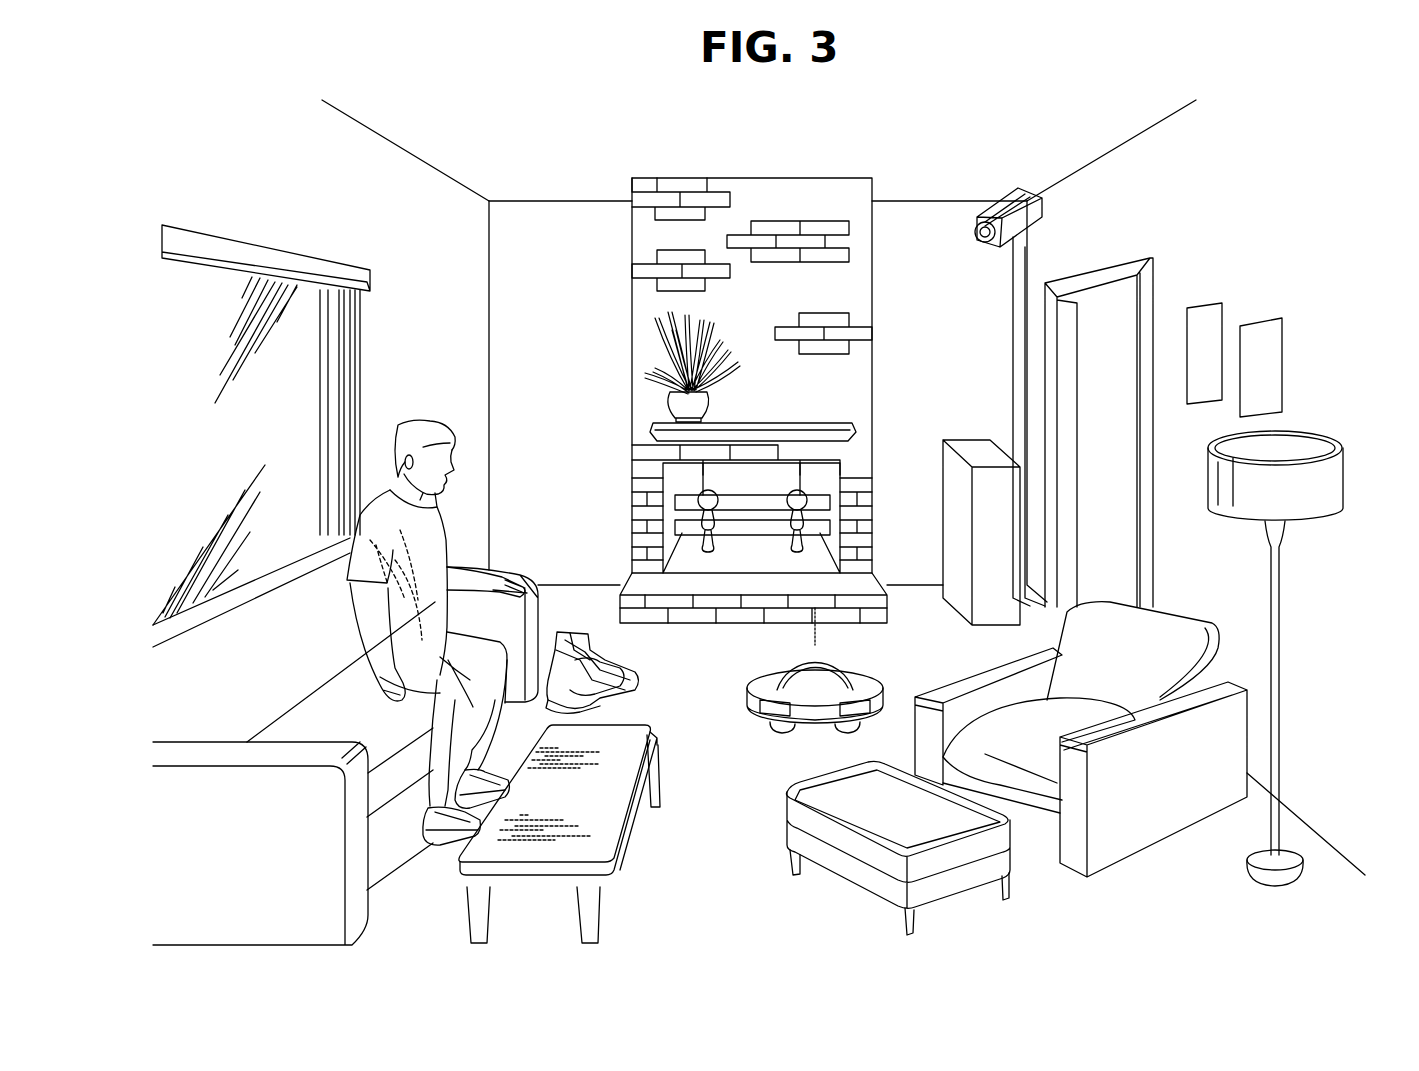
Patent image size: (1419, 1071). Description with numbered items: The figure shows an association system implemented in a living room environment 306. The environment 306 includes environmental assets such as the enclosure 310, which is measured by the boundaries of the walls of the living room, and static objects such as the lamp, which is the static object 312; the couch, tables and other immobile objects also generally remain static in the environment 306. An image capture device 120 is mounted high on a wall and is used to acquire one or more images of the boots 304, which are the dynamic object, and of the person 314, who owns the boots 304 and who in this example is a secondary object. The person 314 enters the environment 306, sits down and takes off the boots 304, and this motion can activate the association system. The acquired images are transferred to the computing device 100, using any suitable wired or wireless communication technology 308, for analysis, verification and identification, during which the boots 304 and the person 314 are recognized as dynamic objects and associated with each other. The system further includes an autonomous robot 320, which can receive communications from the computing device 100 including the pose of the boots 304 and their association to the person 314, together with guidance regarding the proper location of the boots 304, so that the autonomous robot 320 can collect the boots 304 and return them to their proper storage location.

The enclosure 310 is at (392, 183).
The environment 306 is at (556, 240).
The image capture device 120 is at (1002, 200).
The communication technology 308 is at (1024, 262).
The computing device 100 is at (973, 438).
The static object 312 is at (1350, 478).
The person 314 is at (415, 420).
The boots 304 is at (568, 628).
The autonomous robot 320 is at (848, 656).